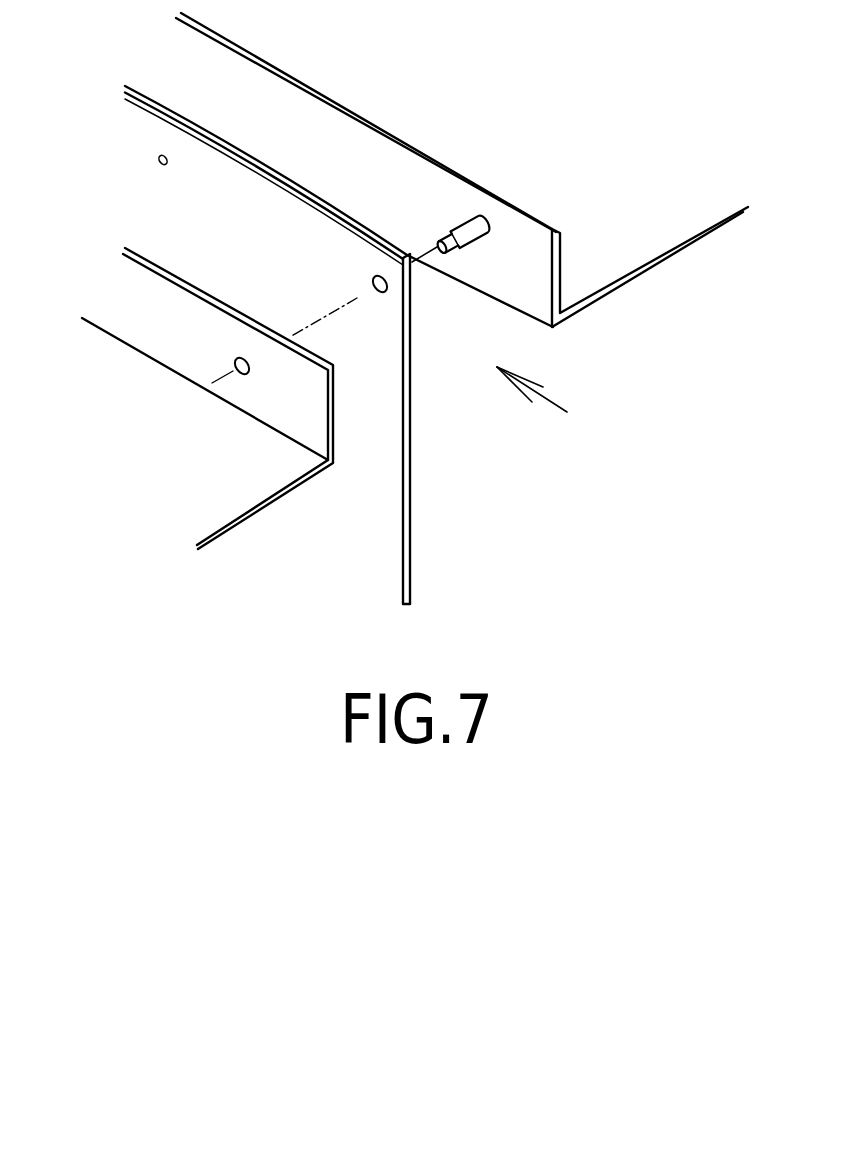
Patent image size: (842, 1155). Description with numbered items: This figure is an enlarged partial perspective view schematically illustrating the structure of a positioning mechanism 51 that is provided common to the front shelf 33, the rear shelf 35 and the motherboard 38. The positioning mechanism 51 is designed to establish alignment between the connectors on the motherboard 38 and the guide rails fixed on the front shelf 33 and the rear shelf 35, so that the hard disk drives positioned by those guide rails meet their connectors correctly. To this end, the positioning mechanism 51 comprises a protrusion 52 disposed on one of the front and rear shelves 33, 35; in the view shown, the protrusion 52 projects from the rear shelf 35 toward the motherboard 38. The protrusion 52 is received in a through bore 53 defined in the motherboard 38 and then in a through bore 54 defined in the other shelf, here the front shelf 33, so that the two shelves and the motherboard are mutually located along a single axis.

The front shelf 33 is at (255, 507).
The rear shelf 35 is at (640, 277).
The motherboard 38 is at (410, 460).
The positioning mechanism 51 is at (557, 410).
The protrusion 52 is at (458, 223).
The through bore 53 is at (372, 282).
The through bore 54 is at (235, 364).